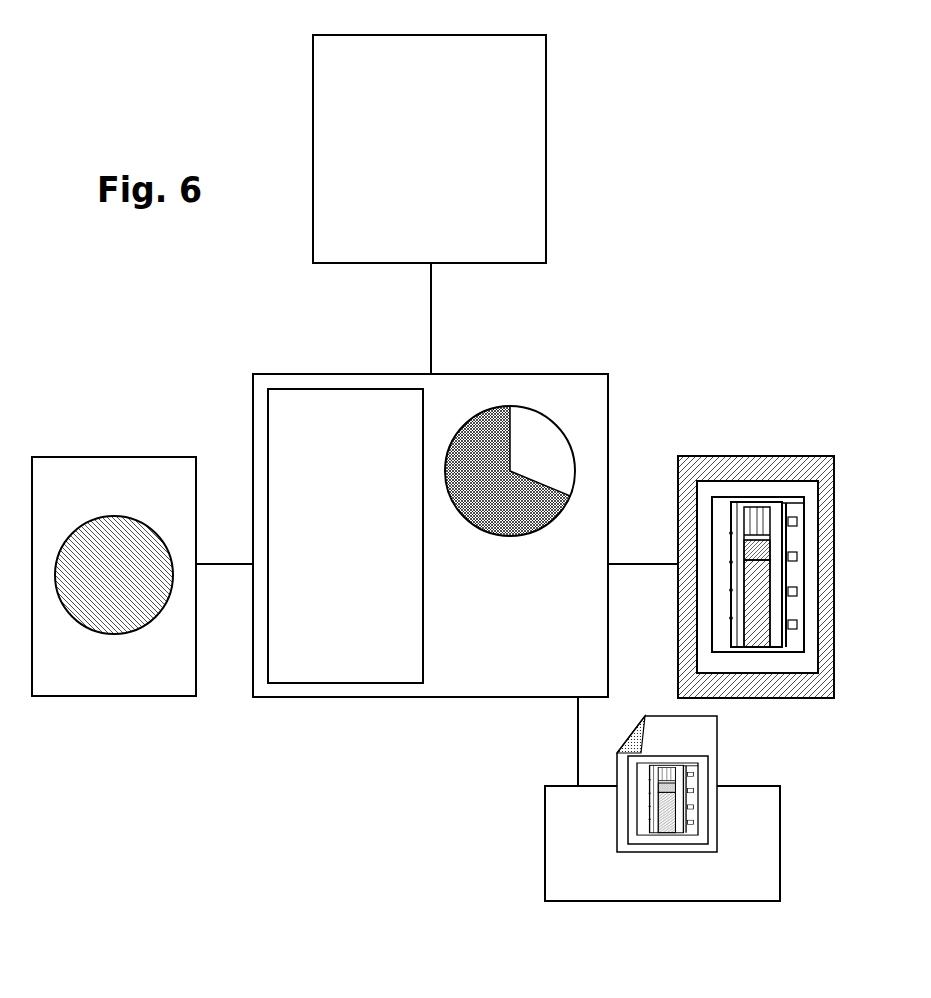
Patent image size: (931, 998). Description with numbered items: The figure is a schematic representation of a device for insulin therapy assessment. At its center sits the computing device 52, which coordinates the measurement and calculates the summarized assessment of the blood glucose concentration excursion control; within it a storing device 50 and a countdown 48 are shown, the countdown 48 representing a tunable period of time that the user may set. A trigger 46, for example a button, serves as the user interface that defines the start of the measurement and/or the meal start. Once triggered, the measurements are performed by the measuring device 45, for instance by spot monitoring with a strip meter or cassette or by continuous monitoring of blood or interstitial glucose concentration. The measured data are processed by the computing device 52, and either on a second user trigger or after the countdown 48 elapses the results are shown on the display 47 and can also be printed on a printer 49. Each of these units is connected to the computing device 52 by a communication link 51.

The blood glucose concentration monitoring device 45 is at (338, 225).
The user interface 46 is at (94, 472).
The display device 47 is at (693, 468).
The countdown 48 is at (533, 430).
The printer 49 is at (570, 831).
The storing device 50 is at (309, 663).
The communication link 51 is at (425, 303).
The computing device 52 is at (443, 667).